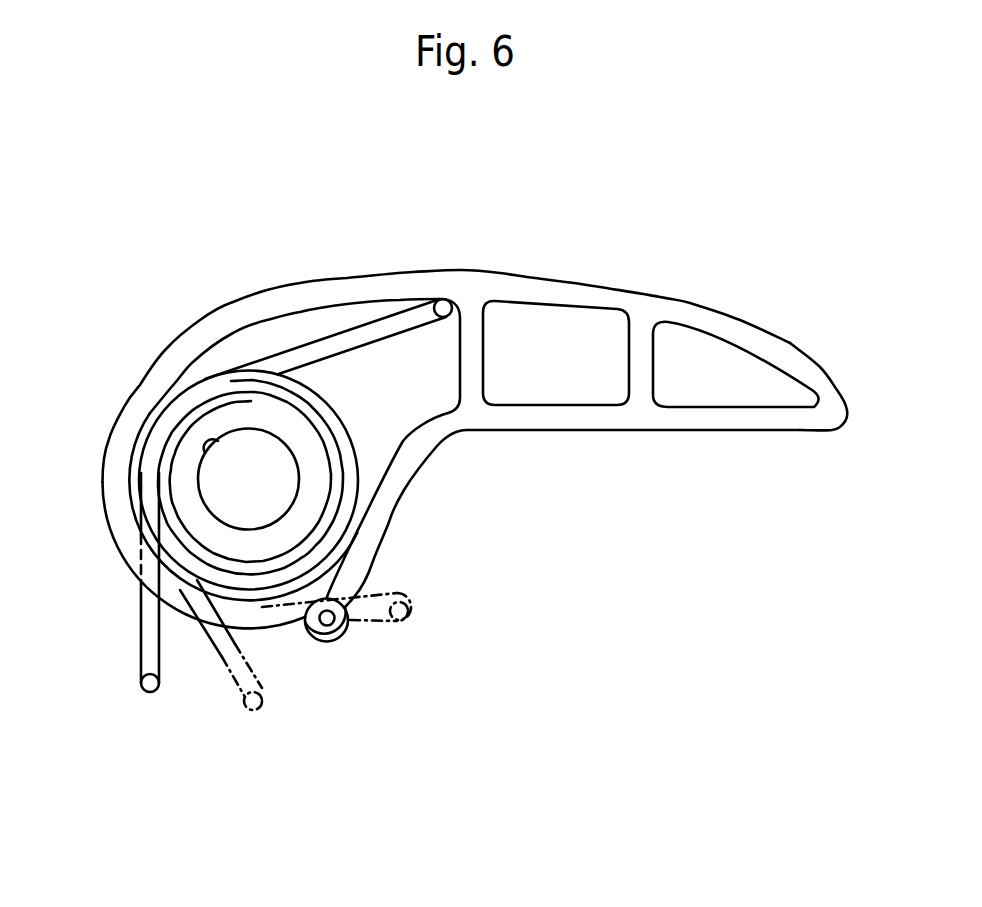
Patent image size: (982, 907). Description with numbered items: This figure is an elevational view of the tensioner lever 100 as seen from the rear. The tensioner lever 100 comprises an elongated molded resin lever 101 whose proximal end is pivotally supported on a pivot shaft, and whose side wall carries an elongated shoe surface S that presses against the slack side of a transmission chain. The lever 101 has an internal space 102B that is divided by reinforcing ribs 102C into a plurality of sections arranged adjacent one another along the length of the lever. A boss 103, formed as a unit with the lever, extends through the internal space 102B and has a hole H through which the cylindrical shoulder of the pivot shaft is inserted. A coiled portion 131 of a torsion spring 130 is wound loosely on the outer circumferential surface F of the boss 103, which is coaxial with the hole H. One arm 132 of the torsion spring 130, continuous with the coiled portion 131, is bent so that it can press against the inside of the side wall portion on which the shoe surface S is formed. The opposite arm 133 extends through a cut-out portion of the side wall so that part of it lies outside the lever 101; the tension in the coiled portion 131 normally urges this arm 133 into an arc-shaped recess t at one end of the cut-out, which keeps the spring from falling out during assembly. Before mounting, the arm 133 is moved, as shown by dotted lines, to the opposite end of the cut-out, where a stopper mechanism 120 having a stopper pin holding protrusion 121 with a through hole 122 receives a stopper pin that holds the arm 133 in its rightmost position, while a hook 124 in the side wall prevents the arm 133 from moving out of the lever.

The tensioner lever 100 is at (446, 403).
The lever 101 is at (812, 431).
The internal space 102B is at (425, 397).
The reinforcing ribs 102C is at (477, 347).
The boss 103 is at (178, 483).
The stopper mechanism 120 is at (412, 691).
The stopper pin holding protrusion 121 is at (350, 620).
The through hole 122 is at (345, 624).
The hook 124 is at (333, 667).
The torsion spring 130 is at (268, 352).
The coiled portion 131 is at (202, 388).
The arm 132 is at (373, 328).
The arm 133 is at (133, 652).
The hole H is at (205, 452).
The outer circumferential surface F is at (285, 407).
The shoe surface S is at (643, 285).
The arc-shaped recess t is at (140, 556).